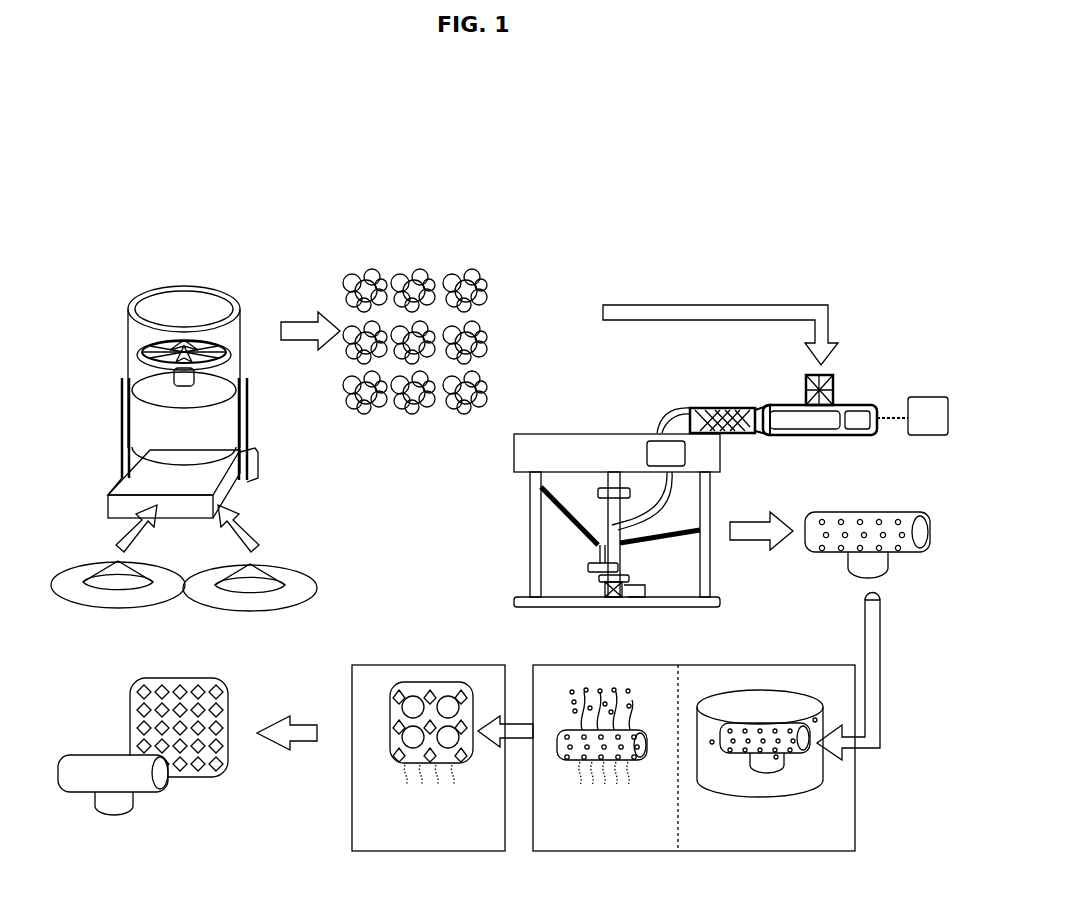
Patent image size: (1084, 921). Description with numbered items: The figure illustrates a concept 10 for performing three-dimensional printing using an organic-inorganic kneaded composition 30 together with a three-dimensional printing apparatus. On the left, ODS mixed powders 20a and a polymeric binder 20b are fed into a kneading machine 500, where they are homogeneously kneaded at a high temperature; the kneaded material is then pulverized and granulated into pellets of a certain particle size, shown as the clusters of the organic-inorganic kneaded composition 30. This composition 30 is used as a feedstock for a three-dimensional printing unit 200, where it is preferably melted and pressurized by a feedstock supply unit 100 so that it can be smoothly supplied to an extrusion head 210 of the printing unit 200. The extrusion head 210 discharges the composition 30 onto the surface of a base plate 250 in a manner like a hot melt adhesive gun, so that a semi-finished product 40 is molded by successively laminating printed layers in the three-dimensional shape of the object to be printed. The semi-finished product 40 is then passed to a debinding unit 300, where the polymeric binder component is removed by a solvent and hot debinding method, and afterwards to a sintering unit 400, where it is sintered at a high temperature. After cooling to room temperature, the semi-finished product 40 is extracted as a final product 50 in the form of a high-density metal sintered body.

The concept 10 is at (503, 250).
The ODS mixed powders 20a is at (94, 600).
The polymeric binder 20b is at (243, 603).
The organic-inorganic kneaded composition 30 is at (410, 425).
The semi-finished product 40 is at (866, 500).
The final product 50 is at (170, 785).
The feedstock supply unit 100 is at (850, 395).
The three-dimensional printing unit 200 is at (656, 490).
The extrusion head 210 is at (625, 568).
The base plate 250 is at (712, 600).
The debinding unit 300 is at (806, 660).
The sintering unit 400 is at (426, 660).
The kneading machine 500 is at (255, 410).